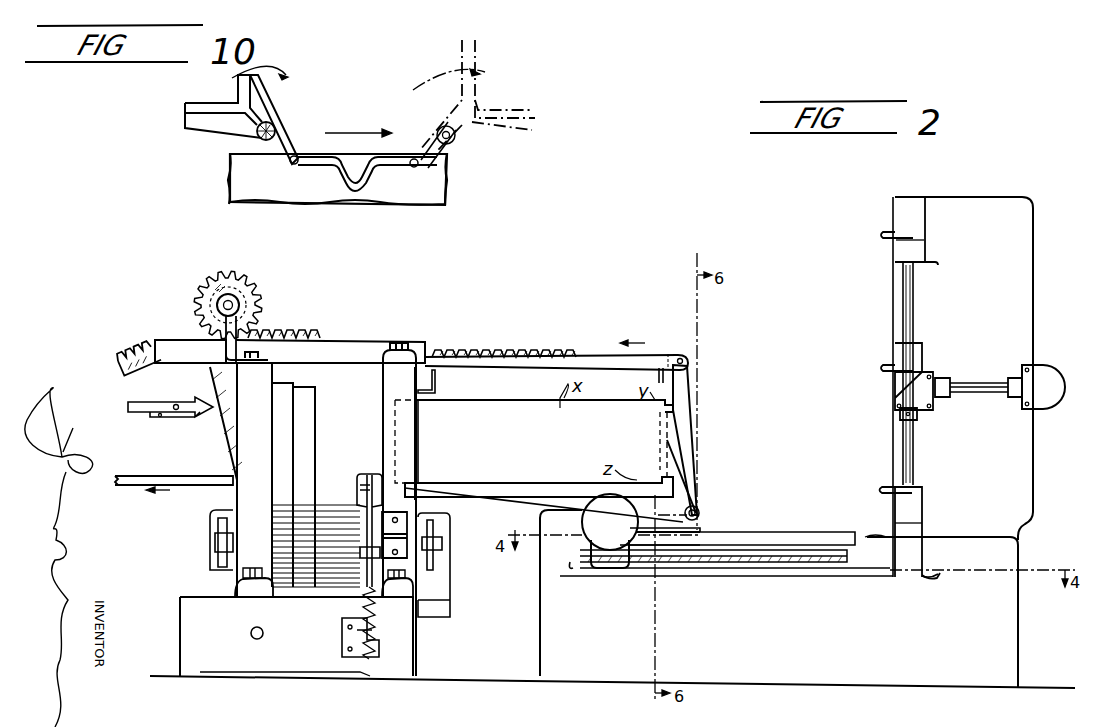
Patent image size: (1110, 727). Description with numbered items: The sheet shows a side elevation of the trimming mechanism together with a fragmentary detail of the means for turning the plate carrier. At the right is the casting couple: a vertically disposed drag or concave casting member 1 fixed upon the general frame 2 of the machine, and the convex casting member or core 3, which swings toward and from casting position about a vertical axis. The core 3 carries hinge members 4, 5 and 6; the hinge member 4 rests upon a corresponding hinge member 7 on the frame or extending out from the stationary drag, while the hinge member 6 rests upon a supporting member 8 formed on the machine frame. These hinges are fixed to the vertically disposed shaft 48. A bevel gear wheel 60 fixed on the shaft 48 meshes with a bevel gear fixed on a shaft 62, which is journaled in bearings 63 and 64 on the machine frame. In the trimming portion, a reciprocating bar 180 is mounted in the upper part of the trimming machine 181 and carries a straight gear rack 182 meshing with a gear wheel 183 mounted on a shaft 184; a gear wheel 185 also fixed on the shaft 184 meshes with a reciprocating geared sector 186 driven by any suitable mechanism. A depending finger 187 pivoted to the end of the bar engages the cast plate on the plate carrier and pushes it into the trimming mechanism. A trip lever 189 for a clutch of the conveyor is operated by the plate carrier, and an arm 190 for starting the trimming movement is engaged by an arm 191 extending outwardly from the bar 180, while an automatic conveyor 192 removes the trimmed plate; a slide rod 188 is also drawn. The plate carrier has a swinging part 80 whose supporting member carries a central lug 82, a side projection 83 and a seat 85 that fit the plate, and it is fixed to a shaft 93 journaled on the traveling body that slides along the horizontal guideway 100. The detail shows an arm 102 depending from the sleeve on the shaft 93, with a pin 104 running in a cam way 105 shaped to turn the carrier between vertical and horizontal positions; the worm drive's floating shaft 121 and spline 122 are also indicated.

In FIG. 2, the concave casting member 1 is at (1034, 252).
In FIG. 2, the general frame 2 is at (1018, 620).
In FIG. 2, the convex casting member 3 is at (892, 312).
In FIG. 2, the hinge member 4 is at (904, 210).
In FIG. 2, the hinge member 5 is at (906, 348).
In FIG. 2, the hinge member 6 is at (902, 503).
In FIG. 2, the hinge member 7 is at (912, 248).
In FIG. 2, the supporting member 8 is at (910, 540).
In FIG. 2, the vertically disposed shaft 48 is at (904, 288).
In FIG. 2, the bevel gear wheel 60 is at (900, 410).
In FIG. 2, the shaft 62 is at (982, 384).
In FIG. 2, the bearing 63 is at (943, 376).
In FIG. 2, the bearing 64 is at (1015, 378).
In FIG. 10, the swinging part of plate carrier 80 is at (228, 103).
In FIG. 2, the projecting lug 82 is at (675, 411).
In FIG. 2, the projection 83 is at (672, 480).
In FIG. 2, the seat 85 is at (660, 470).
In FIG. 10, the shaft 93 is at (274, 128).
In FIG. 2, the shaft 93 is at (698, 508).
In FIG. 2, the guideway 100 is at (806, 512).
In FIG. 10, the arm 102 is at (282, 142).
In FIG. 10, the pin 104 is at (290, 165).
In FIG. 10, the cam way 105 is at (326, 168).
In FIG. 2, the floating shaft 121 is at (758, 556).
In FIG. 2, the spline 122 is at (720, 553).
In FIG. 2, the reciprocating bar 180 is at (592, 354).
In FIG. 2, the trimming machine 181 is at (352, 400).
In FIG. 2, the gear rack 182 is at (476, 354).
In FIG. 2, the gear wheel 183 is at (258, 286).
In FIG. 2, the shaft 184 is at (224, 306).
In FIG. 2, the gear wheel 185 is at (210, 292).
In FIG. 2, the geared sector 186 is at (306, 332).
In FIG. 2, the depending finger 187 is at (690, 382).
In FIG. 2, the slide rod 188 is at (186, 478).
In FIG. 2, the trip lever 189 is at (440, 506).
In FIG. 2, the arm 190 is at (436, 382).
In FIG. 2, the arm 191 is at (658, 376).
In FIG. 2, the automatic conveyor 192 is at (136, 410).